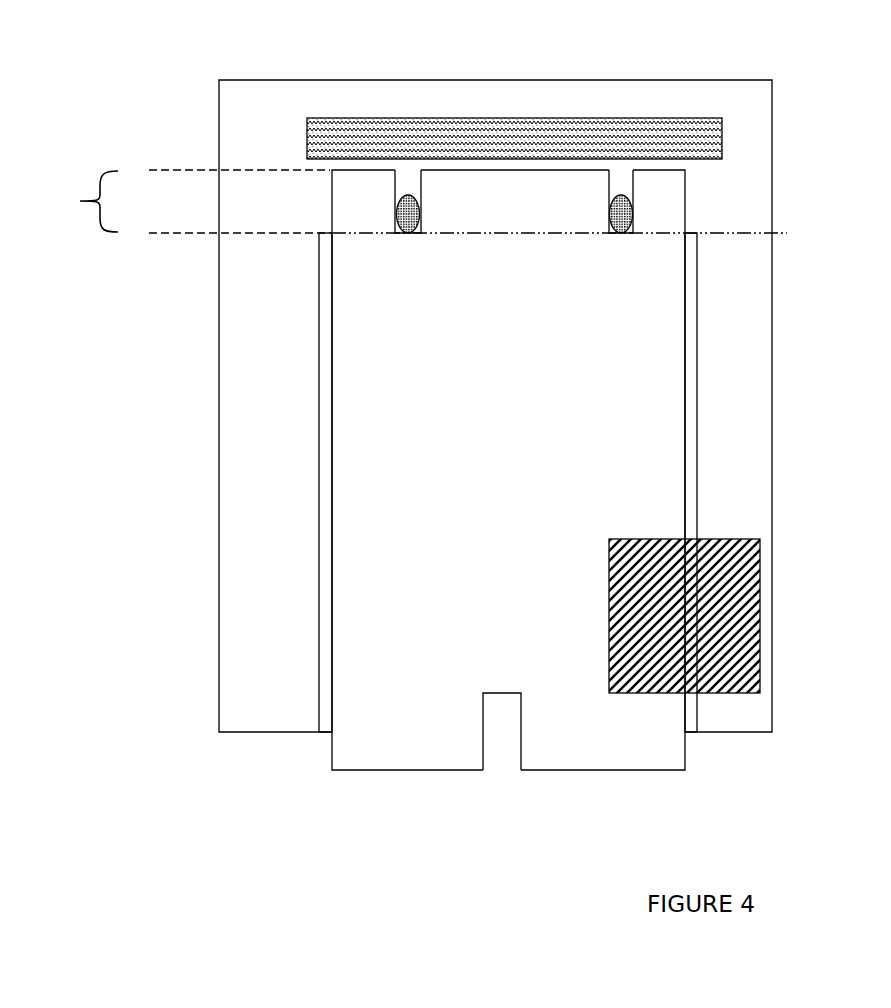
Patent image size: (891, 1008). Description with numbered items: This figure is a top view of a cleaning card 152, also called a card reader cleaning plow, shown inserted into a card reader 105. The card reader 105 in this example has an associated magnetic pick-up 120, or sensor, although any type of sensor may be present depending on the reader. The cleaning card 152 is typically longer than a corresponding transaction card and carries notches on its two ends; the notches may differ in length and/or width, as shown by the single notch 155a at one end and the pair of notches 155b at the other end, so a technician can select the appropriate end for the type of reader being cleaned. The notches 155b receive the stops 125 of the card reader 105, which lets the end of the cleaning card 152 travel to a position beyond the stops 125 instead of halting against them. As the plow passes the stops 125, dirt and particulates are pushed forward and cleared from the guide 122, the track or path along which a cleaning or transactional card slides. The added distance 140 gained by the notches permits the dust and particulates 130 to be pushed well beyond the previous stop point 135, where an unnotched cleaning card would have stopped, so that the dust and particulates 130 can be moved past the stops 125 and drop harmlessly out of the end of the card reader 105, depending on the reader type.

The card reader 105 is at (232, 502).
The magnetic pick-up 120 is at (733, 578).
The guide 122 is at (318, 270).
The stops 125 is at (612, 220).
The dust and particulates 130 is at (709, 143).
The previous stop point 135 is at (370, 234).
The added distance 140 is at (177, 201).
The cleaning card 152 is at (347, 758).
The notch 155a is at (497, 745).
The notches 155b is at (622, 170).